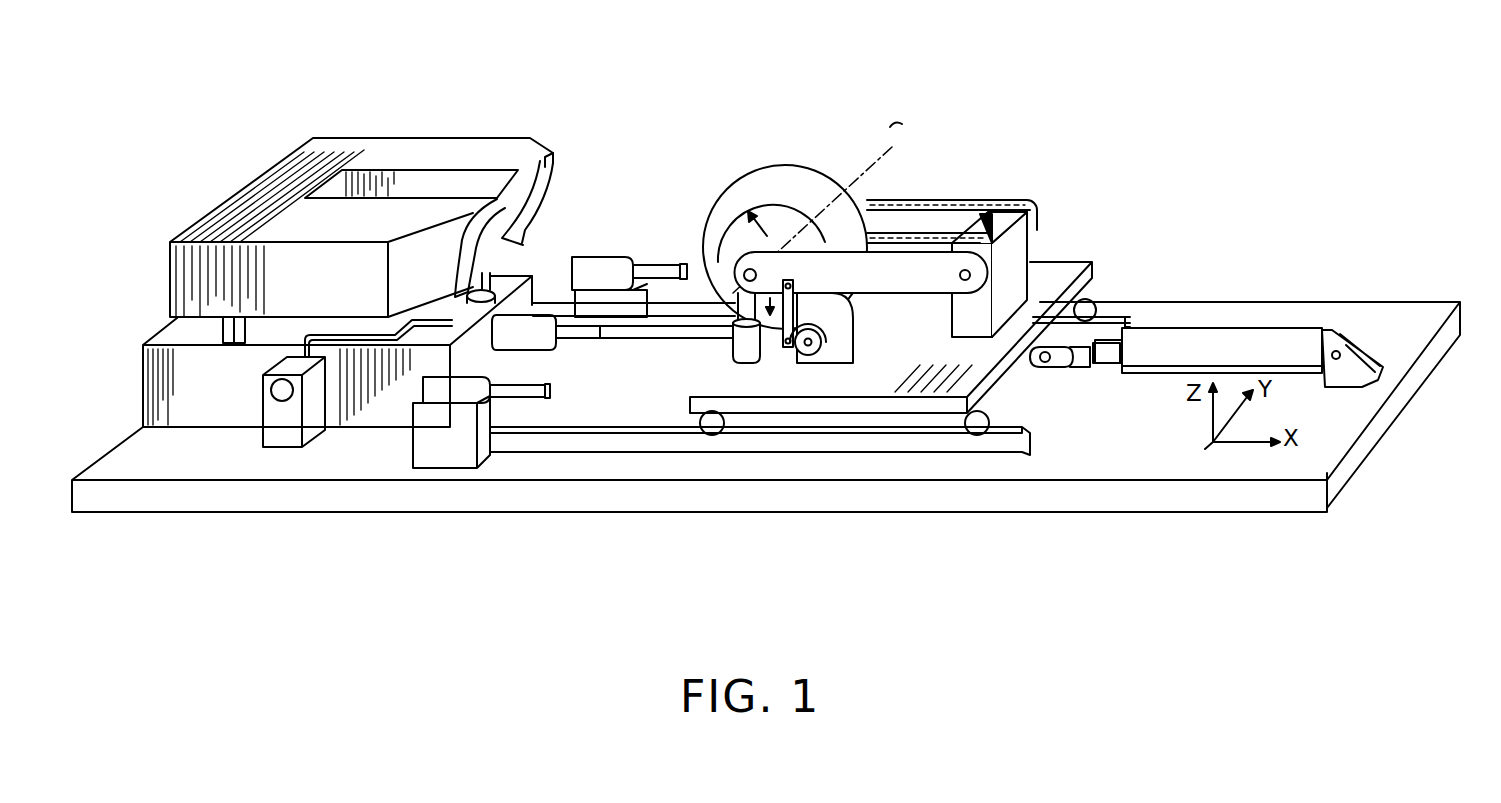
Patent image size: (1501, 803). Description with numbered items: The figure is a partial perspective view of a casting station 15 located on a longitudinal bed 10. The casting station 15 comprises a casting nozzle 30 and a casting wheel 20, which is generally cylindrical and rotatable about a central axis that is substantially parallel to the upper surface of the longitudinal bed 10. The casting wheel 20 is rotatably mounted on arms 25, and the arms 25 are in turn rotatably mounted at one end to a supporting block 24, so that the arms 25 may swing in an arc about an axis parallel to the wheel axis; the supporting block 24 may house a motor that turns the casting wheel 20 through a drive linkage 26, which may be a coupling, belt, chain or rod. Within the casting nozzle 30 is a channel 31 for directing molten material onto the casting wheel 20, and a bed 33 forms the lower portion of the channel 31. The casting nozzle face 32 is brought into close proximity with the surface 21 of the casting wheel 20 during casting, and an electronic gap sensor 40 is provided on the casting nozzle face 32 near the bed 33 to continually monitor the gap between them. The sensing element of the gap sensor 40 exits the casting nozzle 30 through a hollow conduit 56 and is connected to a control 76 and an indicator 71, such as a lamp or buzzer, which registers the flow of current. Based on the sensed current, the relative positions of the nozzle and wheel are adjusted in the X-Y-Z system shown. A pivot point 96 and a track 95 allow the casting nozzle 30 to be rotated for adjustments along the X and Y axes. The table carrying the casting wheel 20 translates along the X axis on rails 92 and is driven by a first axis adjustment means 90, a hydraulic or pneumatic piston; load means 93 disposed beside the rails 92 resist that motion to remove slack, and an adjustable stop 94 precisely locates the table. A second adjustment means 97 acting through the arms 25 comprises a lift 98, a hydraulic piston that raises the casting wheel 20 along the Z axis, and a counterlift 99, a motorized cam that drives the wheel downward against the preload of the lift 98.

The longitudinal bed 10 is at (1325, 450).
The casting station 15 is at (683, 105).
The casting wheel 20 is at (820, 160).
The surface 21 is at (705, 235).
The supporting block 24 is at (1020, 289).
The arms 25 is at (898, 205).
The drive linkage 26 is at (952, 207).
The casting nozzle 30 is at (483, 113).
The channel 31 is at (413, 177).
The casting nozzle face 32 is at (523, 203).
The bed 33 is at (517, 157).
The electronic gap sensor 40 is at (500, 247).
The conduit 56 is at (405, 318).
The indicator 71 is at (271, 393).
The control 76 is at (283, 432).
The first axis adjustment means 90 is at (1263, 340).
The rails 92 is at (1123, 308).
The load means 93 is at (617, 263).
The adjustable stop 94 is at (542, 347).
The track 95 is at (232, 340).
The pivot point 96 is at (452, 347).
The second adjustment means 97 is at (772, 352).
The lift 98 is at (740, 348).
The counterlift 99 is at (845, 340).